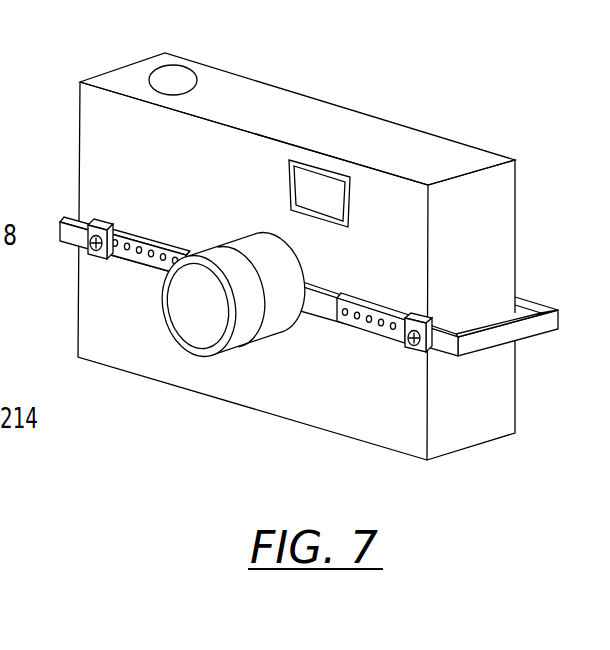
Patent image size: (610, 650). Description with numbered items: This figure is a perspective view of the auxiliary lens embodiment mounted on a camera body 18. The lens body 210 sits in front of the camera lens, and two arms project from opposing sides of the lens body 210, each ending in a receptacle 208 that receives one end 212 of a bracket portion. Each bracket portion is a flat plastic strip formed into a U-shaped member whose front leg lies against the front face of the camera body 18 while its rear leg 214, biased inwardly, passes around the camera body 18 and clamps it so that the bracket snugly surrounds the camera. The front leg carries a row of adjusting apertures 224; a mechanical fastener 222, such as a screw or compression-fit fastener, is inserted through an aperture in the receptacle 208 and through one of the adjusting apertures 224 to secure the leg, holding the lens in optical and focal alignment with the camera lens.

The camera body 18 is at (503, 370).
The receptacle 208 is at (98, 258).
The lens body 210 is at (267, 337).
The end of bracket portion 212 is at (181, 246).
The rear leg 214 is at (538, 302).
The mechanical fastener 222 is at (89, 245).
The adjusting apertures 224 is at (141, 257).